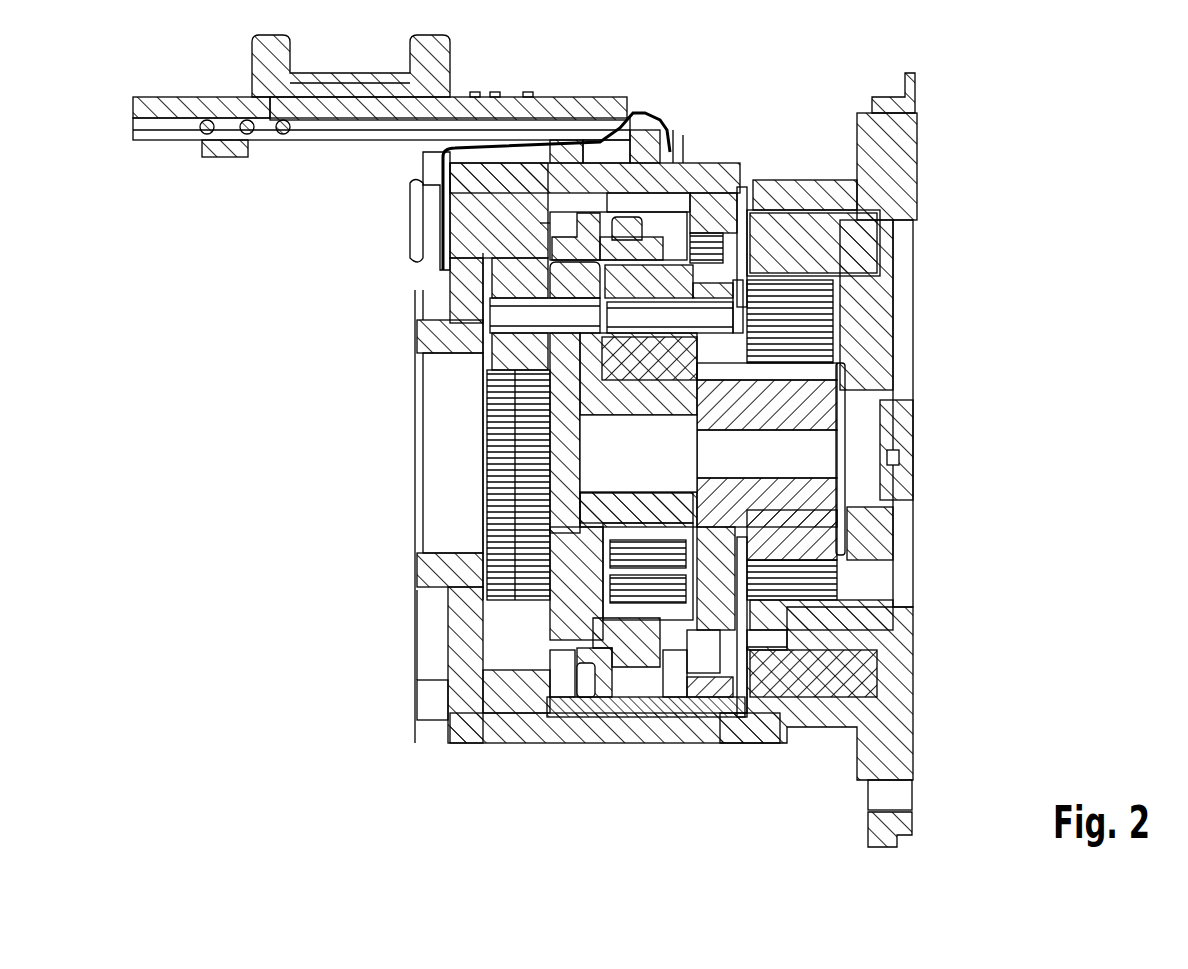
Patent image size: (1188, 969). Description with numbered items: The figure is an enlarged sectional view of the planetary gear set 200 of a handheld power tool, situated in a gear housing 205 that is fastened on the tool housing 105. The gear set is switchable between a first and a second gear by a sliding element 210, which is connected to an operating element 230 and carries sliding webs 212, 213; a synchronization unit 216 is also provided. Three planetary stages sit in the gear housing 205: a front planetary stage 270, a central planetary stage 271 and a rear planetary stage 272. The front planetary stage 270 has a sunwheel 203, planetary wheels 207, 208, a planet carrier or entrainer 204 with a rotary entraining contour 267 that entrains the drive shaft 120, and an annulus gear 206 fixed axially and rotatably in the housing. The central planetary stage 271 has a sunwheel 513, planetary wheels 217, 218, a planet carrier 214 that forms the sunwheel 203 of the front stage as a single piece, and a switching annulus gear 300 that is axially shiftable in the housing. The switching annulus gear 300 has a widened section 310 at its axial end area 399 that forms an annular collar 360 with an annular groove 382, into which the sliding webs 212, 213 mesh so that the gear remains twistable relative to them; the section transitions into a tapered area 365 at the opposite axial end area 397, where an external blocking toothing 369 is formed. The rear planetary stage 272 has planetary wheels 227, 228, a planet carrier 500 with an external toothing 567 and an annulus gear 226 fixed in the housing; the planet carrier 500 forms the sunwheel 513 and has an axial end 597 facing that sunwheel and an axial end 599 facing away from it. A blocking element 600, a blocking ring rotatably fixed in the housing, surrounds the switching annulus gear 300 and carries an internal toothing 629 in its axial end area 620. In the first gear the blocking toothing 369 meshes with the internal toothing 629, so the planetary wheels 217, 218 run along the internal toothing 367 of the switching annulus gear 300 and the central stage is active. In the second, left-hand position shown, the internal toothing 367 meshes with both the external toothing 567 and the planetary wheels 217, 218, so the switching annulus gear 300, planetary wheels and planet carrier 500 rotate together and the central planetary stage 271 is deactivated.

The tool housing 105 is at (905, 95).
The drive shaft 120 is at (900, 425).
The planetary gear set 200 is at (777, 103).
The sunwheel 203 is at (815, 495).
The planet carrier 204 is at (878, 355).
The gear housing 205 is at (880, 725).
The annulus gear 206 is at (860, 225).
The planetary wheel 207 is at (795, 325).
The planetary wheel 208 is at (760, 665).
The sliding element 210 is at (566, 110).
The sliding web 212 is at (583, 687).
The sliding web 213 is at (583, 232).
The planet carrier 214 is at (740, 587).
The synchronization unit 216 is at (672, 703).
The planetary wheel 217 is at (745, 255).
The planetary wheel 218 is at (643, 605).
The annulus gear 226 is at (430, 335).
The planetary wheel 227 is at (547, 287).
The planetary wheel 228 is at (510, 517).
The operating element 230 is at (262, 52).
The rotary entraining contour 267 is at (905, 530).
The front planetary stage 270 is at (810, 265).
The central planetary stage 271 is at (613, 650).
The rear planetary stage 272 is at (457, 745).
The switching annulus gear 300 is at (575, 235).
The widened section 310 is at (540, 223).
The annular collar 360 is at (673, 135).
The tapered area 365 is at (830, 255).
The internal toothing 367 is at (653, 270).
The external blocking toothing 369 is at (630, 225).
The annular groove 382 is at (530, 680).
The axial end area 397 is at (755, 688).
The axial end area 399 is at (573, 670).
The planet carrier 500 is at (550, 650).
The sunwheel 513 is at (842, 525).
The external toothing 567 is at (607, 273).
The axial end 597 is at (615, 355).
The axial end 599 is at (675, 287).
The blocking element 600 is at (720, 697).
The axial end area 620 is at (785, 727).
The internal toothing 629 is at (740, 280).